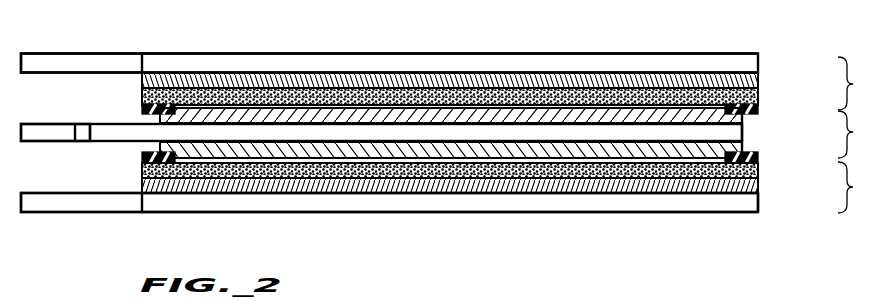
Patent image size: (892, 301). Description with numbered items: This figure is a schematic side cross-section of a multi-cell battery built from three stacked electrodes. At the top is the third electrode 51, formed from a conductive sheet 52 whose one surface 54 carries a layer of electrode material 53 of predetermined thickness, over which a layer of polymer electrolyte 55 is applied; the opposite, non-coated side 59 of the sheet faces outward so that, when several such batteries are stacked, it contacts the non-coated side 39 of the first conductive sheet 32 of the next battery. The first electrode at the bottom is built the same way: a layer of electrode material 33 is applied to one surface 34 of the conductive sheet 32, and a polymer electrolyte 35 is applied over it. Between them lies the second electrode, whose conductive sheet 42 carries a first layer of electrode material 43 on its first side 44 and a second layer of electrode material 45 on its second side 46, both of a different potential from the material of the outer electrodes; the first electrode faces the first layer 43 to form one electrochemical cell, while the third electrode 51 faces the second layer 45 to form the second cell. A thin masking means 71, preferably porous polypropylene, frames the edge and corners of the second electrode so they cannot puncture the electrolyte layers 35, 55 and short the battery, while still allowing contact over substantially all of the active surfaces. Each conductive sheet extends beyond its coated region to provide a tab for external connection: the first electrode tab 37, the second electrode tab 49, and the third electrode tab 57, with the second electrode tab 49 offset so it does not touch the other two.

The conductive sheet 32 is at (758, 209).
The electrode material 33 is at (758, 196).
The surface 34 is at (655, 198).
The polymer electrolyte 35 is at (758, 181).
The first electrode tab 37 is at (125, 198).
The non-coated side 39 is at (455, 213).
The conductive sheet 42 is at (742, 136).
The first layer of electrode material 43 is at (750, 151).
The first side 44 is at (500, 142).
The second layer of electrode material 45 is at (758, 121).
The second side 46 is at (558, 123).
The second electrode tab 49 is at (57, 137).
The third electrode 51 is at (859, 135).
The conductive sheet 52 is at (758, 57).
The electrode material 53 is at (758, 77).
The surface 54 is at (678, 72).
The polymer electrolyte 55 is at (758, 99).
The third electrode tab 57 is at (85, 53).
The non-coated side 59 is at (447, 54).
The masking means 71 is at (142, 107).